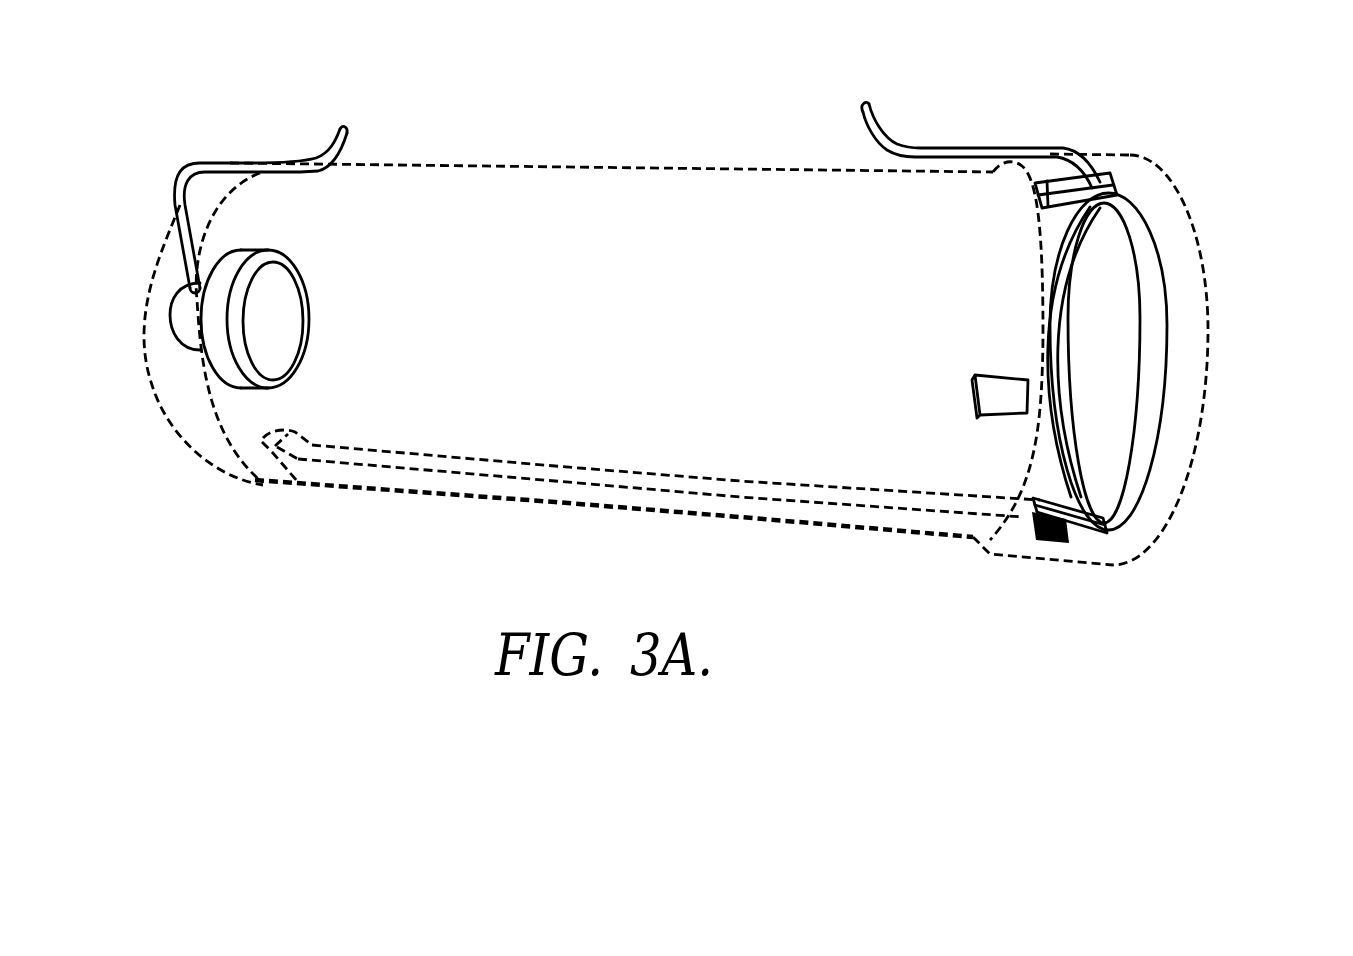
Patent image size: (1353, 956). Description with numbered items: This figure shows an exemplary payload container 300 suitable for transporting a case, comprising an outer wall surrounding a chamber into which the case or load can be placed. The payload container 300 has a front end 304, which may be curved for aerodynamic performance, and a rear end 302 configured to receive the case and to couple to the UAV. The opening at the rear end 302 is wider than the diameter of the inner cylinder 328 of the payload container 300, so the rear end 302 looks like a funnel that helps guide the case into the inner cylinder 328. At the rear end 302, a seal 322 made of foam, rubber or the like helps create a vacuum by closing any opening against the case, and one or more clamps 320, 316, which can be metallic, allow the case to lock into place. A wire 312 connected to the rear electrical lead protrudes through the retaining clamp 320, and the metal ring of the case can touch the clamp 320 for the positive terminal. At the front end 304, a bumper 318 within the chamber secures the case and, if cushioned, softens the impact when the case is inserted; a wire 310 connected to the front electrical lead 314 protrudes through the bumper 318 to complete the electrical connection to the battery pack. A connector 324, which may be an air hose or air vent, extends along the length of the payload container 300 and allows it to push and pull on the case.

The payload container 300 is at (1272, 238).
The rear end 302 is at (1113, 353).
The front end 304 is at (157, 390).
The wire 310 is at (357, 138).
The wire 312 is at (883, 127).
The front electrical lead 314 is at (300, 321).
The clamp 316 is at (1096, 542).
The bumper 318 is at (180, 320).
The clamp 320 is at (1097, 178).
The seal 322 is at (1170, 416).
The connector 324 is at (708, 493).
The inner cylinder 328 is at (565, 168).